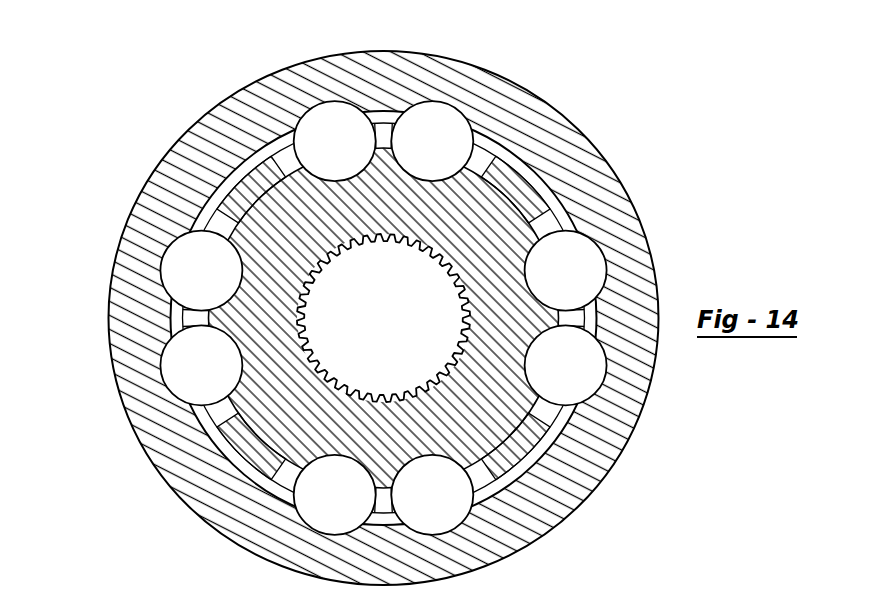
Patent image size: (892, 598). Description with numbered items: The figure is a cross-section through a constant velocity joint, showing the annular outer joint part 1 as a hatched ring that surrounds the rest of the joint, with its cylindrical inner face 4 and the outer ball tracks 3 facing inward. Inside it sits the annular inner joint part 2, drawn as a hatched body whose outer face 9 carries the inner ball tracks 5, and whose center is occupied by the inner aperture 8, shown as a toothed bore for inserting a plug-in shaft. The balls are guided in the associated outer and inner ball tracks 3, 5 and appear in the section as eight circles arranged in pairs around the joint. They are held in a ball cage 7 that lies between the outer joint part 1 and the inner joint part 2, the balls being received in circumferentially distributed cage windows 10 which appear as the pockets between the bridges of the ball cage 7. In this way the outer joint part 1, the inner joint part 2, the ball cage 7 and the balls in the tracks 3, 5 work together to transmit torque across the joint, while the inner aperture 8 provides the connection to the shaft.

The outer joint part 1 is at (385, 78).
The inner joint part 2 is at (487, 203).
The outer ball tracks 3 is at (460, 116).
The cylindrical inner face 4 is at (587, 345).
The inner ball tracks 5 is at (535, 268).
The ball cage 7 is at (262, 190).
The inner aperture 8 is at (286, 212).
The outer face 9 is at (347, 243).
The cage windows 10 is at (233, 240).